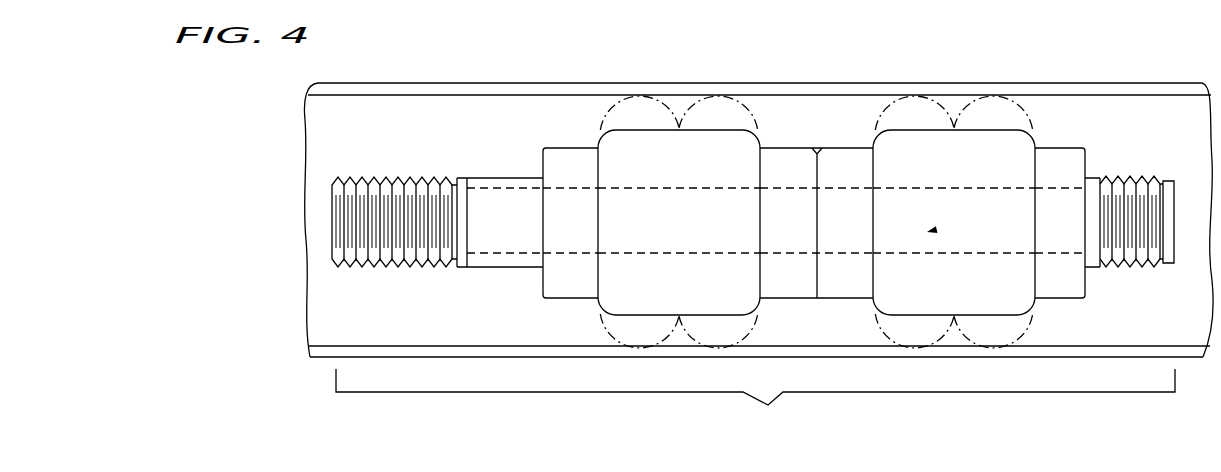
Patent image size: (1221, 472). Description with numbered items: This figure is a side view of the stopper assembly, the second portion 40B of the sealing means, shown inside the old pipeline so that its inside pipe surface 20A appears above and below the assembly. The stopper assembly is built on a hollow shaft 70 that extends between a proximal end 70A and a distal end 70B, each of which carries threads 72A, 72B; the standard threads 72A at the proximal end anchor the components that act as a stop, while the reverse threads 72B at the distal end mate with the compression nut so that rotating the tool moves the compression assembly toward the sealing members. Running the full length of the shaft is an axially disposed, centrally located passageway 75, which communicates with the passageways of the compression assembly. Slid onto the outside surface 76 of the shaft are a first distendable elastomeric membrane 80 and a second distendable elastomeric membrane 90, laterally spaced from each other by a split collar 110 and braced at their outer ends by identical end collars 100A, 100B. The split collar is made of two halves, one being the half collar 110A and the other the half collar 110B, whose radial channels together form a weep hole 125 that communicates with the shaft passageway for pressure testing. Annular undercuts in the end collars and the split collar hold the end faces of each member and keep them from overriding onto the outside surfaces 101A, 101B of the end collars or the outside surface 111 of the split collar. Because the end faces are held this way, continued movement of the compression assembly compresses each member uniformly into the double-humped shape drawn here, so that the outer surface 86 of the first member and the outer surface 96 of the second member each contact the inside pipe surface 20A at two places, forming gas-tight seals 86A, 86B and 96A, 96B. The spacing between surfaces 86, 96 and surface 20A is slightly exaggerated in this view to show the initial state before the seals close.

The inside pipe surface 20A is at (796, 340).
The second portion of the sealing means 40B is at (755, 402).
The hollow shaft 70 is at (498, 181).
The proximal end 70A is at (1147, 207).
The distal end 70B is at (385, 207).
The threads 72A is at (1148, 268).
The threads 72B is at (355, 268).
The centrally located passageway 75 is at (936, 230).
The outside surface 76 is at (484, 280).
The first distendable elastomeric membrane 80 is at (688, 170).
The outer surface 86 is at (691, 198).
The gas-tight seal 86A is at (657, 95).
The gas-tight seal 86B is at (738, 97).
The second distendable elastomeric membrane 90 is at (955, 170).
The outer surface 96 is at (965, 198).
The gas-tight seal 96A is at (937, 98).
The gas-tight seal 96B is at (1025, 100).
The end collar 100A is at (1050, 165).
The end collar 100B is at (562, 178).
The outside surface 101A is at (1070, 147).
The outside surface 101B is at (562, 148).
The split collar 110 is at (810, 219).
The half collar 110A is at (852, 168).
The left sleeve portion 110B is at (745, 245).
The outside surface 111 is at (785, 299).
The weep hole 125 is at (822, 138).